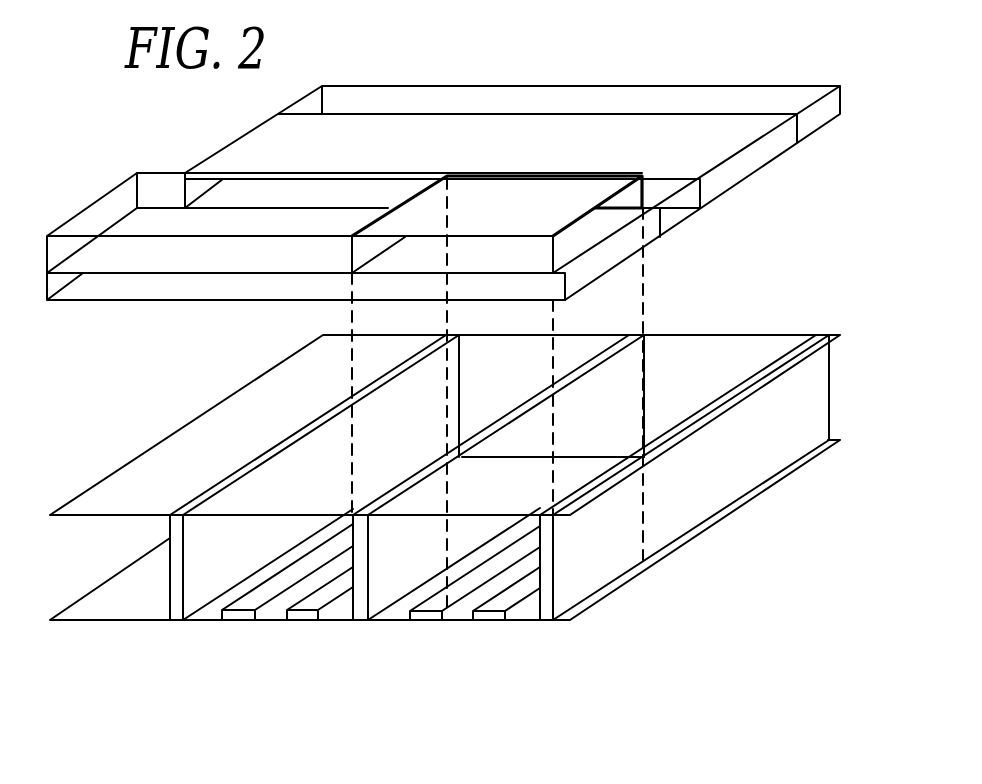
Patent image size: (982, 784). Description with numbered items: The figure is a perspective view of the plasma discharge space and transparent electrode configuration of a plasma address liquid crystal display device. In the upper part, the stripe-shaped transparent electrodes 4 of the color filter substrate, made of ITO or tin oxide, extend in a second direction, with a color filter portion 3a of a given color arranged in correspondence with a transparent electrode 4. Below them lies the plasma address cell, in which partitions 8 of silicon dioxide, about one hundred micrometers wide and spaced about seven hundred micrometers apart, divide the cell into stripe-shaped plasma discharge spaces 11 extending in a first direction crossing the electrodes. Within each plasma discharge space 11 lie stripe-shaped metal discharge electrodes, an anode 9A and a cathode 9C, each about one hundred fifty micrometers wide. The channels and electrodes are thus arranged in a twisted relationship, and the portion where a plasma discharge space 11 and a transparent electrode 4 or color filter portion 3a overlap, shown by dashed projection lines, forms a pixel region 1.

The pixel region 1 is at (541, 190).
The color filter portion 3a is at (555, 215).
The transparent electrode 4 is at (772, 151).
The partition 8 is at (777, 435).
The anode 9A is at (487, 620).
The cathode 9C is at (424, 620).
The plasma discharge space 11 is at (398, 560).